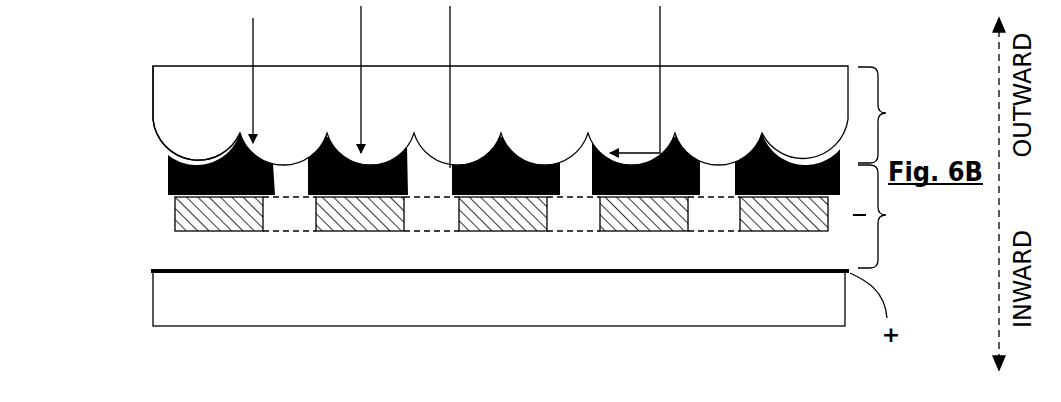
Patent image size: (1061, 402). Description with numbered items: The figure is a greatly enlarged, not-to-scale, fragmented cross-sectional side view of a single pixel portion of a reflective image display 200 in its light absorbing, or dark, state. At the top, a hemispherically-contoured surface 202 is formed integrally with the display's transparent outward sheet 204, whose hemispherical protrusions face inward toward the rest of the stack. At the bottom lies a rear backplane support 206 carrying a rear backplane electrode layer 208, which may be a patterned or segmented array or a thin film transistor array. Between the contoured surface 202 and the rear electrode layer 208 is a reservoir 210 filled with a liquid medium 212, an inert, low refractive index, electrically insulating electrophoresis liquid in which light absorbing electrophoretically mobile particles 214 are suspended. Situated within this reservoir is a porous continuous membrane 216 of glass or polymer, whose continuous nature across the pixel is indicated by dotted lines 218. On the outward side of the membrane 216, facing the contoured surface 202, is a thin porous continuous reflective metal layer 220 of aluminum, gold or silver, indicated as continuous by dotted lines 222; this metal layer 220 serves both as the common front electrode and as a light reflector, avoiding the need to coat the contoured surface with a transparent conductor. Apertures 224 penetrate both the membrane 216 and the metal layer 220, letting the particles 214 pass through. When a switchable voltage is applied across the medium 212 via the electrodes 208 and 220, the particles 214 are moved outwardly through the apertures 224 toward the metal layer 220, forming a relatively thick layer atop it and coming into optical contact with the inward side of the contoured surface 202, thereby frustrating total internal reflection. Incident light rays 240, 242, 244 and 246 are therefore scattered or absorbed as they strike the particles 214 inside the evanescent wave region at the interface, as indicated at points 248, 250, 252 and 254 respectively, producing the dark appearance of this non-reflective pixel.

The display 200 is at (766, 42).
The hemispherically-contoured surface 202 is at (168, 156).
The transparent outward sheet 204 is at (546, 115).
The rear backplane support 206 is at (482, 311).
The rear backplane electrode layer 208 is at (153, 271).
The reservoir 210 is at (896, 216).
The liquid medium 212 is at (482, 260).
The electrophoretically mobile light absorbing particles 214 is at (161, 170).
The porous continuous membrane 216 is at (166, 226).
The dotted lines 218 is at (299, 200).
The porous continuous reflective metal layer 220 is at (164, 220).
The dotted lines 222 is at (434, 199).
The apertures 224 is at (555, 223).
The light ray 240 is at (252, 52).
The light ray 242 is at (360, 42).
The light ray 244 is at (450, 52).
The light ray 246 is at (660, 53).
The point 248 is at (255, 150).
The point 250 is at (372, 158).
The point 252 is at (455, 197).
The point 254 is at (600, 150).